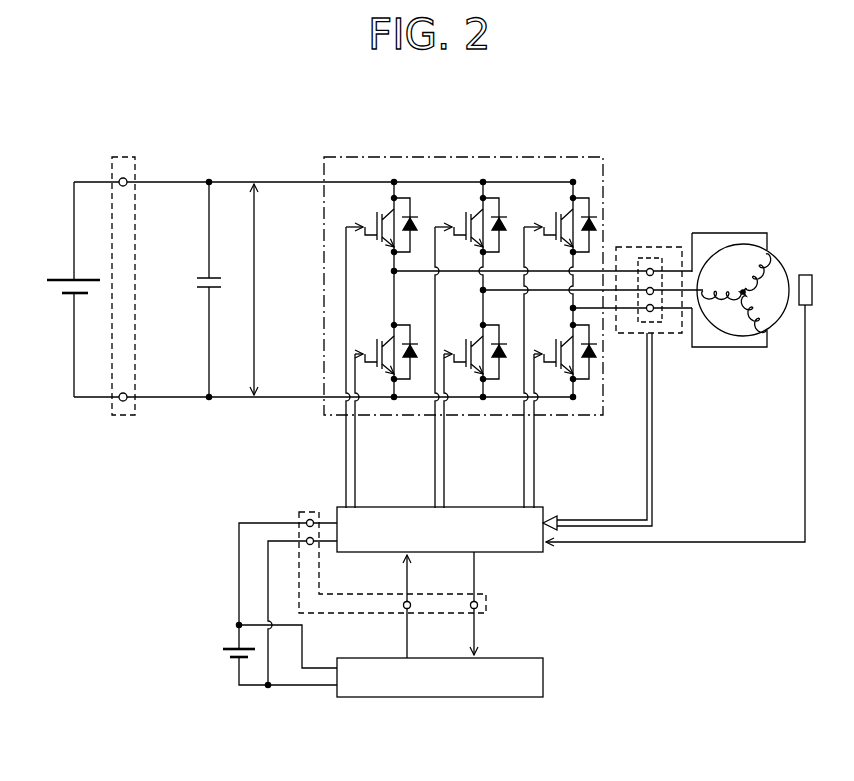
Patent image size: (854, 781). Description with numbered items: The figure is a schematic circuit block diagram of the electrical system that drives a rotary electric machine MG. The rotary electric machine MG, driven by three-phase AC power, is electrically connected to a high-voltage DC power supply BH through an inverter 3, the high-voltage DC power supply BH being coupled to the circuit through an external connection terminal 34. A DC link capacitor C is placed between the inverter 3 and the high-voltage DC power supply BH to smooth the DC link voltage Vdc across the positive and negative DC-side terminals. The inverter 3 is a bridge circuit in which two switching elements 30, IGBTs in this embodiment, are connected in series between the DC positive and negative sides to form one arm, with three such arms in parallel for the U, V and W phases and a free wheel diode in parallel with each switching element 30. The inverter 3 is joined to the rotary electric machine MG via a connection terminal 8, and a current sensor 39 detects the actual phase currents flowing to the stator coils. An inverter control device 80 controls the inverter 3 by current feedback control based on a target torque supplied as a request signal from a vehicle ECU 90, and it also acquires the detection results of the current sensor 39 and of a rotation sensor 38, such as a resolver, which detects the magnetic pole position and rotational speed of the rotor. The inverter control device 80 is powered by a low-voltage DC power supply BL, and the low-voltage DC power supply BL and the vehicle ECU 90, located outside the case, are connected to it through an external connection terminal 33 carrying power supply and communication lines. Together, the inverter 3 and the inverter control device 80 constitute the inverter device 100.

The inverter 3 is at (604, 163).
The inverter device 100 is at (547, 374).
The connection terminal 8 is at (649, 287).
The switching element 30 is at (376, 256).
The external connection terminal 33 is at (308, 510).
The external connection terminal 34 is at (123, 418).
The rotation sensor 38 is at (805, 273).
The current sensor 39 is at (641, 247).
The inverter control device 80 is at (510, 555).
The vehicle ECU 90 is at (440, 699).
The high-voltage DC power supply BH is at (66, 278).
The low-voltage DC power supply BL is at (233, 648).
The DC link capacitor C is at (205, 278).
The rotary electric machine MG is at (773, 337).
The DC link voltage Vdc is at (251, 289).